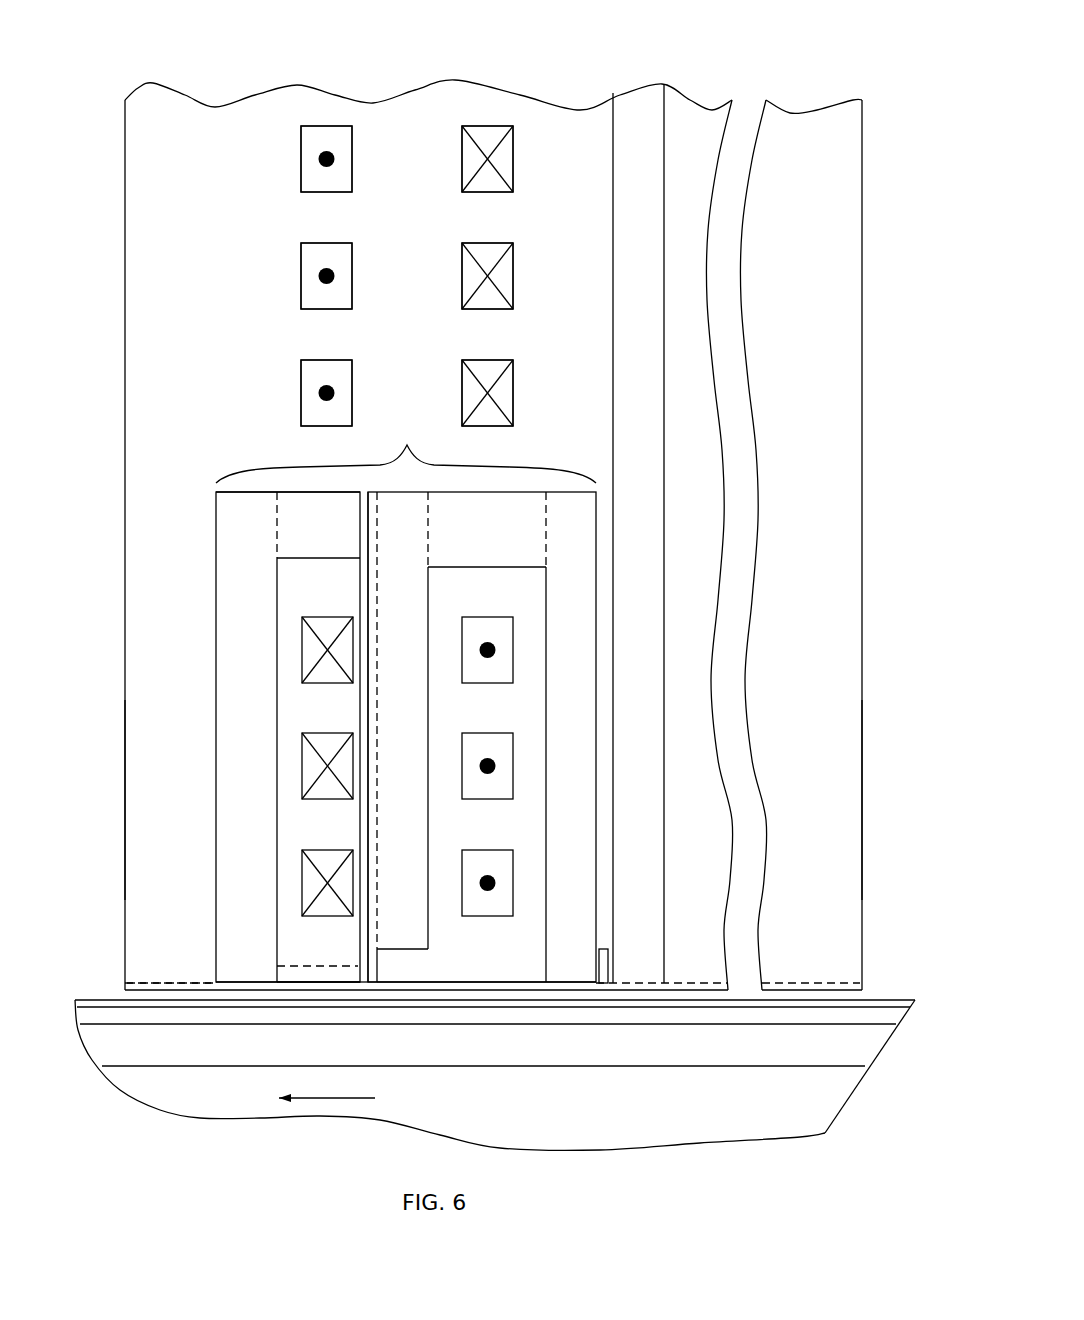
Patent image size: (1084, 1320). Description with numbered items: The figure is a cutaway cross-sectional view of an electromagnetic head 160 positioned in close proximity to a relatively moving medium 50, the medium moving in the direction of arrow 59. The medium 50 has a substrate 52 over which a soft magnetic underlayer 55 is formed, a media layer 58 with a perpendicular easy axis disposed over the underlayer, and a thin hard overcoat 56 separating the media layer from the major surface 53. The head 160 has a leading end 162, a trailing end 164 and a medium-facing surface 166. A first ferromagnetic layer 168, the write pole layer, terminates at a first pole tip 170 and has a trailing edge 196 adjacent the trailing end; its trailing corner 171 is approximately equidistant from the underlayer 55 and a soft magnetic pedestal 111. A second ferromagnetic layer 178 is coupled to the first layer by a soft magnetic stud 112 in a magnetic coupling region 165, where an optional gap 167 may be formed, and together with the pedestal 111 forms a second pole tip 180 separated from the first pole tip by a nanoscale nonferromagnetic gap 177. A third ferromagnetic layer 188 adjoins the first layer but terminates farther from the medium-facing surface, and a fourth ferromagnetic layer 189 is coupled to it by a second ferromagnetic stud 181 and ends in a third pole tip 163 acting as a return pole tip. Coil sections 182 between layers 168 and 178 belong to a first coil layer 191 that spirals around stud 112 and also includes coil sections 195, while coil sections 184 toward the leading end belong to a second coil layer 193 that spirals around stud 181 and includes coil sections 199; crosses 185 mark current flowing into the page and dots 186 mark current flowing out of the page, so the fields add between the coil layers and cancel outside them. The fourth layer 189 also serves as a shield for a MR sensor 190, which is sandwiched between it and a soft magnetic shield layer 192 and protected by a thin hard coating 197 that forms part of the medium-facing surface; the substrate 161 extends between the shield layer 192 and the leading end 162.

The medium 50 is at (824, 1134).
The substrate 52 is at (589, 1100).
The major surface 53 is at (892, 997).
The soft magnetic underlayer 55 is at (493, 1056).
The overcoat 56 is at (757, 1003).
The media layer 58 is at (224, 1018).
The arrow 59 is at (325, 1100).
The soft magnetic pedestal 111 is at (277, 970).
The soft magnetic stud 112 is at (277, 520).
The electromagnetic head 160 is at (138, 76).
The substrate 161 is at (745, 537).
The leading end 162 is at (866, 815).
The third pole tip 163 is at (572, 992).
The trailing end 164 is at (122, 817).
The magnetic coupling region 165 is at (406, 451).
The medium-facing surface 166 is at (157, 992).
The gap 167 is at (358, 538).
The first ferromagnetic layer 168 is at (378, 707).
The first pole tip 170 is at (373, 993).
The trailing corner 171 is at (378, 978).
The nanoscale nonferromagnetic gap 177 is at (363, 993).
The second ferromagnetic layer 178 is at (224, 752).
The second pole tip 180 is at (313, 993).
The second ferromagnetic stud 181 is at (482, 737).
The coil sections 182 is at (302, 800).
The coil sections 184 is at (513, 800).
The crosses 185 is at (488, 161).
The dots 186 is at (320, 160).
The third ferromagnetic layer 188 is at (430, 598).
The fourth ferromagnetic layer 189 is at (508, 774).
The MR sensor 190 is at (609, 955).
The first coil layer 191 is at (327, 117).
The soft magnetic shield layer 192 is at (635, 538).
The second coil layer 193 is at (486, 117).
The coil sections 195 is at (301, 305).
The trailing edge 196 is at (366, 708).
The hard coating 197 is at (525, 978).
The coil sections 199 is at (513, 305).